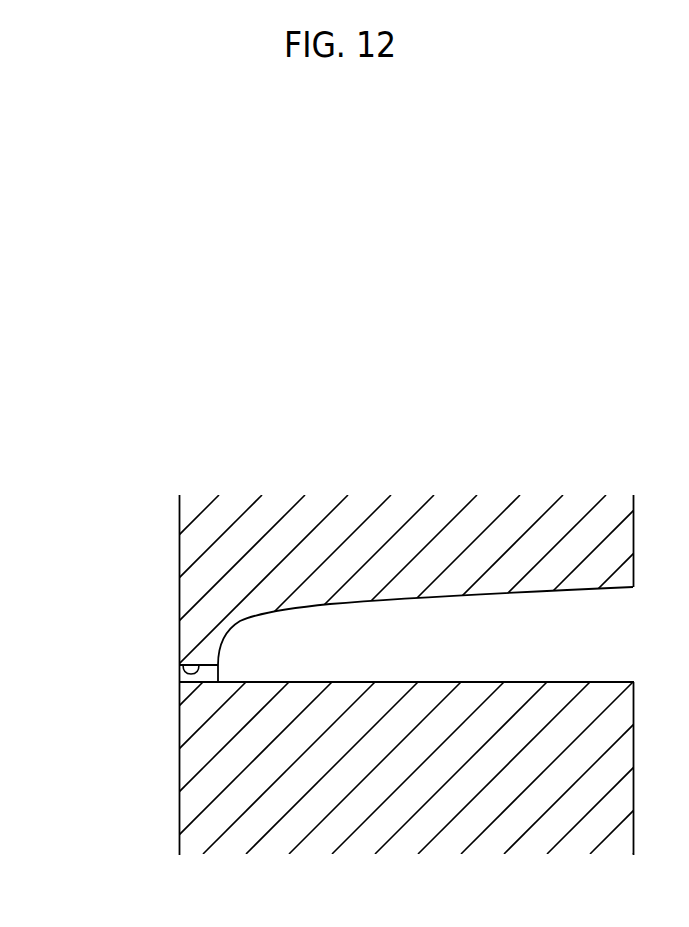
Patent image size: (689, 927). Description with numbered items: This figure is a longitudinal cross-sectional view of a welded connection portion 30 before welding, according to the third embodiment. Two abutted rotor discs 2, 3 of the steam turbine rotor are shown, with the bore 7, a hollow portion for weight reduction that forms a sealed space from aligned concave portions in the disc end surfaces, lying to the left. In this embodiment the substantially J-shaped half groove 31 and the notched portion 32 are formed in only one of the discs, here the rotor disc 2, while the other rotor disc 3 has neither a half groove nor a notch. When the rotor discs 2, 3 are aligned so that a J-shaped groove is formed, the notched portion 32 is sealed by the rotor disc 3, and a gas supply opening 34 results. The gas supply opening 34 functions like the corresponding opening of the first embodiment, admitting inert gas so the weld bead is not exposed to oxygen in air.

The rotor disc 2 is at (178, 555).
The rotor disc 3 is at (178, 790).
The bore 7 is at (61, 608).
The welded connection portion 30 is at (137, 676).
The substantially J-shaped half groove 31 is at (592, 588).
The notched portion 32 is at (180, 680).
The gas supply opening 34 is at (221, 674).